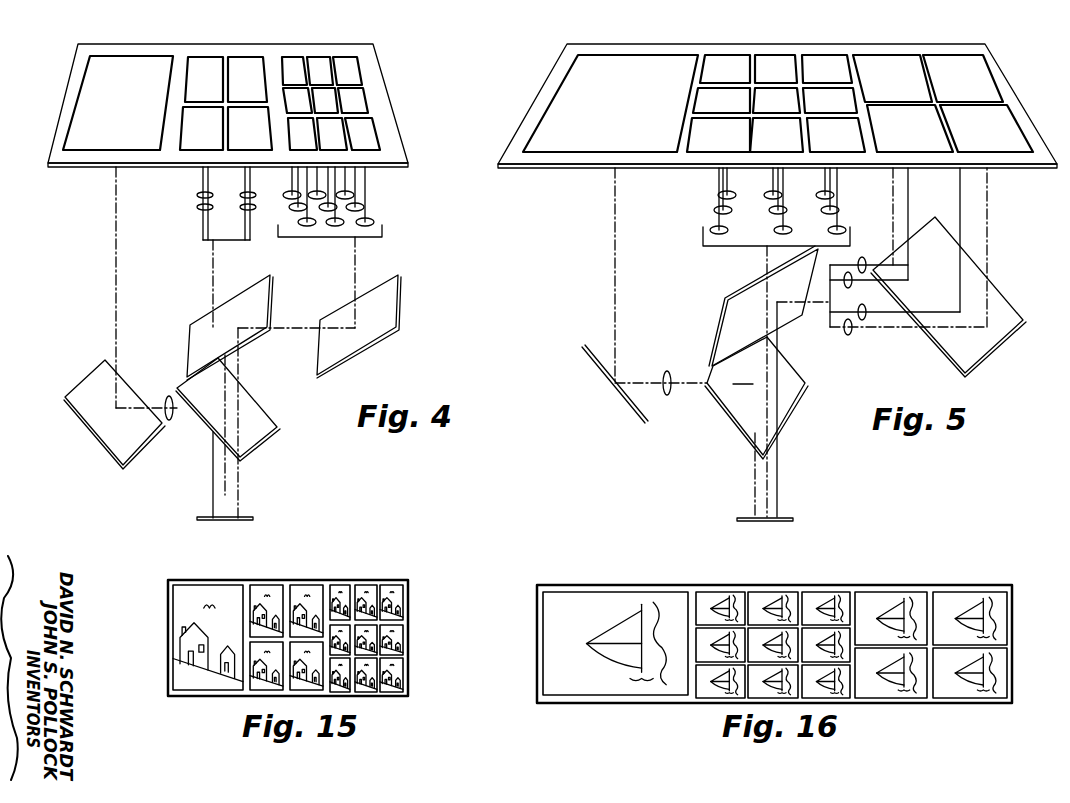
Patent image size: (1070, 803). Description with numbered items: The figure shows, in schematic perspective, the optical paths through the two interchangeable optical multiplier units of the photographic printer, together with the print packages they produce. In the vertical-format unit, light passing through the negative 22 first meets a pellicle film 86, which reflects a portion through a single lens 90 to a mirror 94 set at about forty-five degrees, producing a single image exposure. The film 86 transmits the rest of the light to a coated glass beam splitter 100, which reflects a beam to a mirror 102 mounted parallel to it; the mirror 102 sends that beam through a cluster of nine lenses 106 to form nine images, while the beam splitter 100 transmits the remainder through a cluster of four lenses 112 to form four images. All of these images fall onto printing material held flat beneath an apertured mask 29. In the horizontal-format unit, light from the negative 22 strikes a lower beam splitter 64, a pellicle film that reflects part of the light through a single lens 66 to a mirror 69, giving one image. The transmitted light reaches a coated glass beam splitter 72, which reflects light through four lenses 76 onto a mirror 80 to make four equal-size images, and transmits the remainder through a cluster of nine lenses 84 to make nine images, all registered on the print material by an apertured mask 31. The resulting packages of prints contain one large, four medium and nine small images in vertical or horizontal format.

In FIG. 4, the negative 22 is at (253, 517).
In FIG. 5, the negative 22 is at (793, 520).
In FIG. 4, the apertured mask 29 is at (387, 112).
In FIG. 5, the apertured mask 31 is at (1022, 112).
In FIG. 5, the lower beam splitter 64 is at (785, 397).
In FIG. 5, the single lens 66 is at (667, 371).
In FIG. 5, the mirror 69 is at (588, 362).
In FIG. 5, the coated glass beam splitter 72 is at (728, 322).
In FIG. 5, the four lenses 76 is at (863, 316).
In FIG. 5, the mirror 80 is at (988, 288).
In FIG. 5, the cluster of nine lenses 84 is at (712, 227).
In FIG. 4, the pellicle film 86 is at (262, 430).
In FIG. 4, the single lens 90 is at (169, 420).
In FIG. 4, the mirror 94 is at (90, 413).
In FIG. 4, the coated glass beam splitter 100 is at (258, 293).
In FIG. 4, the mirror 102 is at (393, 308).
In FIG. 4, the cluster of nine lenses 106 is at (370, 213).
In FIG. 4, the cluster of four lenses 112 is at (197, 208).